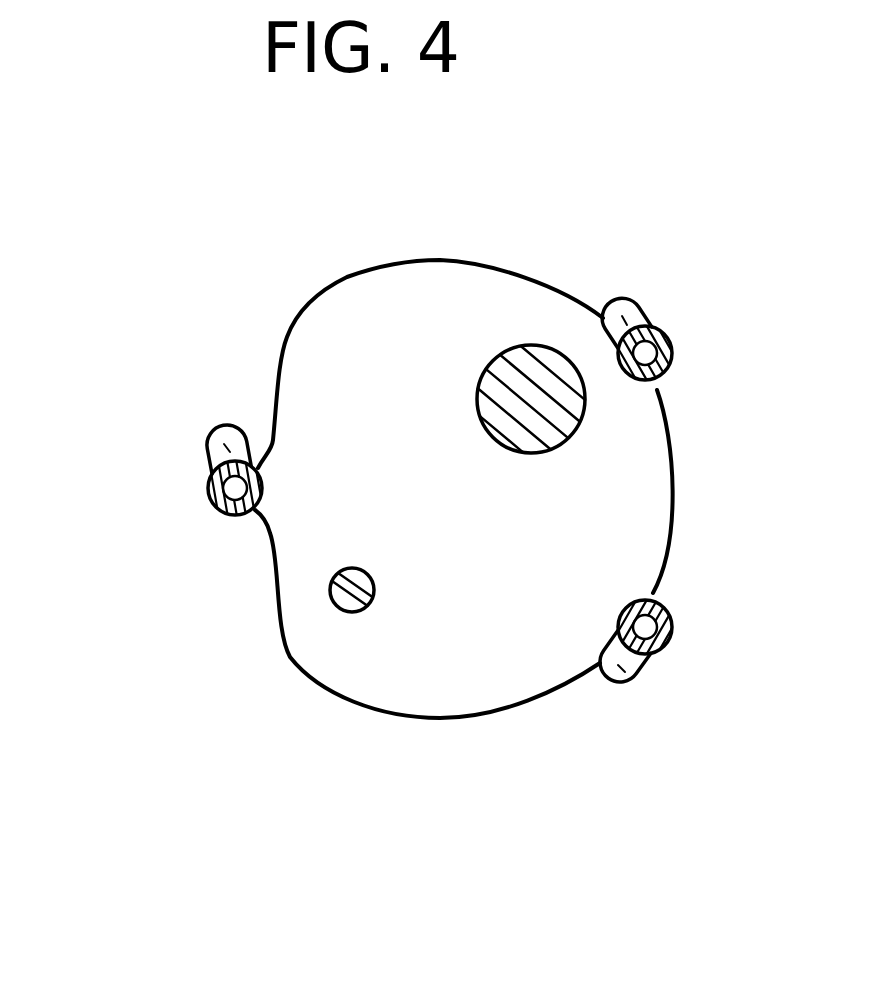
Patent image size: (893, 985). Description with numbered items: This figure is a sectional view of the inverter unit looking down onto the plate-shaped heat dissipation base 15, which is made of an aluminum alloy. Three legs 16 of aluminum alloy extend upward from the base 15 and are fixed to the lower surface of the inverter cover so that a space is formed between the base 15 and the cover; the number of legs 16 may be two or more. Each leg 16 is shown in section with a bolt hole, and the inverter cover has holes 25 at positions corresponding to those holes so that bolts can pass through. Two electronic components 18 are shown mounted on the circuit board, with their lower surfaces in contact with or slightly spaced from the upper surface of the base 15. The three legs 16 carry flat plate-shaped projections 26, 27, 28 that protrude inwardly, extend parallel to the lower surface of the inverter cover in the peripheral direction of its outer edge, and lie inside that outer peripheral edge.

The heat dissipation base 15 is at (442, 260).
The legs 16 is at (263, 487).
The electronic components 18 is at (476, 400).
The holes 25 is at (209, 488).
The projection 26 is at (212, 430).
The projection 27 is at (622, 312).
The projection 28 is at (628, 680).